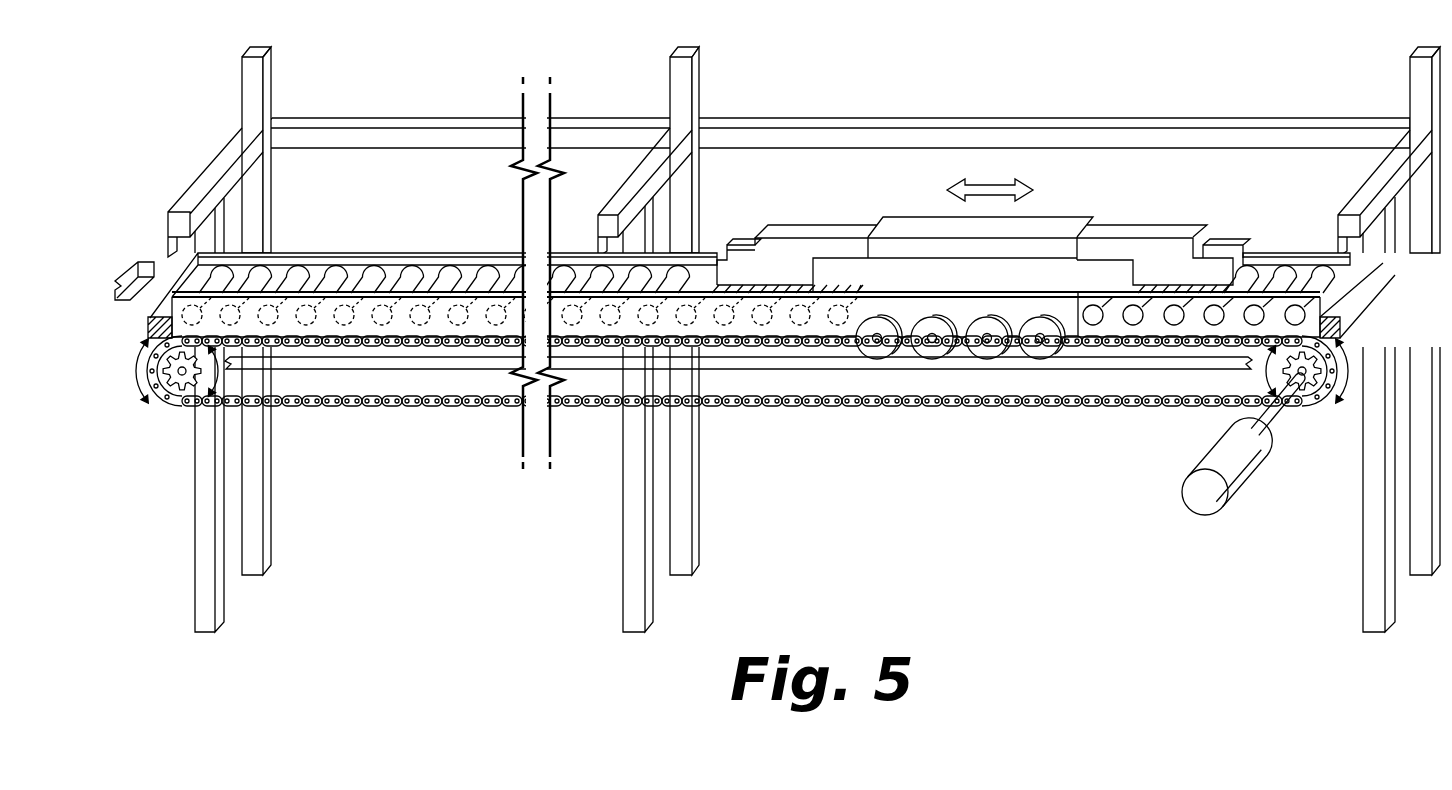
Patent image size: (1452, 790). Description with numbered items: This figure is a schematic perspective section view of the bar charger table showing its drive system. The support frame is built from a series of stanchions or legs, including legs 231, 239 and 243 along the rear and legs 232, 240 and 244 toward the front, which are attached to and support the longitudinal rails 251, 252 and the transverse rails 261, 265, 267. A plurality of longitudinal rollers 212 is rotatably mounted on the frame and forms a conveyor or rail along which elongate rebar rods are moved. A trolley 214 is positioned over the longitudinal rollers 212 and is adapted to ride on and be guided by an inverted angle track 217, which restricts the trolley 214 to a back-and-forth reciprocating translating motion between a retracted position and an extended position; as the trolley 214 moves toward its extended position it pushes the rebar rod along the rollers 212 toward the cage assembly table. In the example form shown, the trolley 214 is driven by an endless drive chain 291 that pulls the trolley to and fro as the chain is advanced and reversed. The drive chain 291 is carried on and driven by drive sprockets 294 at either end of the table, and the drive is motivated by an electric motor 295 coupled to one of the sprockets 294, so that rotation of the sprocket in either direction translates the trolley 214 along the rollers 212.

The longitudinal rollers 212 is at (412, 280).
The trolley 214 is at (1060, 206).
The inverted angle track 217 is at (788, 370).
The leg 231 is at (266, 488).
The inner leg 232 is at (206, 549).
The leg 239 is at (694, 508).
The leg 240 is at (634, 594).
The leg 243 is at (1417, 90).
The leg 244 is at (1372, 597).
The longitudinal rail 251 is at (1225, 122).
The longitudinal rail 252 is at (1313, 258).
The transverse rail 261 is at (227, 158).
The transverse rail 265 is at (643, 177).
The transverse rail 267 is at (1362, 193).
The drive chain 291 is at (1043, 408).
The drive sprocket 294 is at (176, 385).
The electric motor 295 is at (1247, 482).